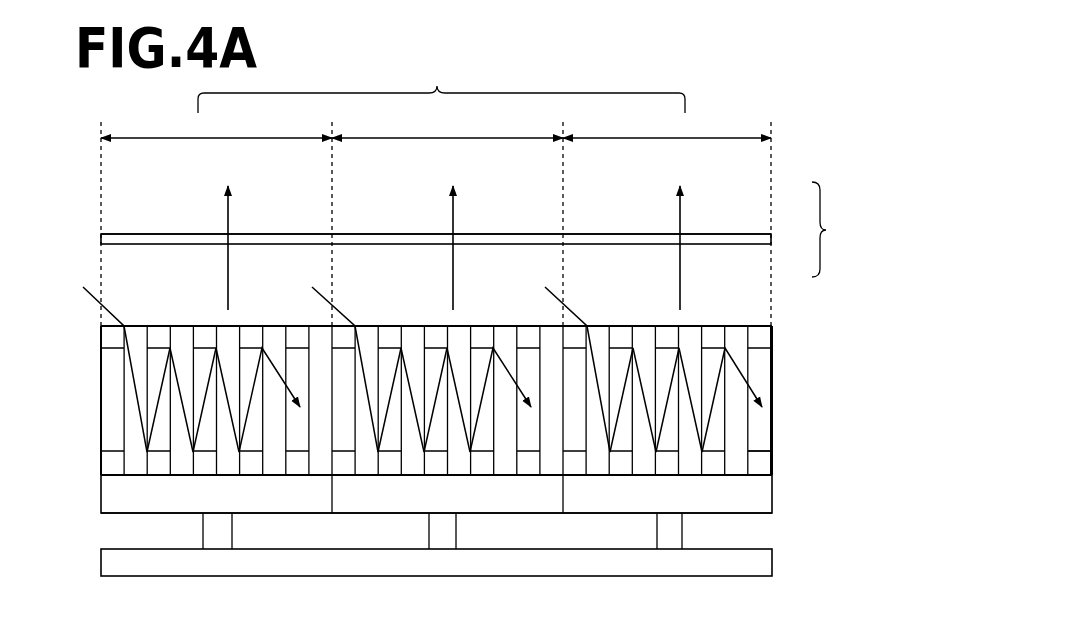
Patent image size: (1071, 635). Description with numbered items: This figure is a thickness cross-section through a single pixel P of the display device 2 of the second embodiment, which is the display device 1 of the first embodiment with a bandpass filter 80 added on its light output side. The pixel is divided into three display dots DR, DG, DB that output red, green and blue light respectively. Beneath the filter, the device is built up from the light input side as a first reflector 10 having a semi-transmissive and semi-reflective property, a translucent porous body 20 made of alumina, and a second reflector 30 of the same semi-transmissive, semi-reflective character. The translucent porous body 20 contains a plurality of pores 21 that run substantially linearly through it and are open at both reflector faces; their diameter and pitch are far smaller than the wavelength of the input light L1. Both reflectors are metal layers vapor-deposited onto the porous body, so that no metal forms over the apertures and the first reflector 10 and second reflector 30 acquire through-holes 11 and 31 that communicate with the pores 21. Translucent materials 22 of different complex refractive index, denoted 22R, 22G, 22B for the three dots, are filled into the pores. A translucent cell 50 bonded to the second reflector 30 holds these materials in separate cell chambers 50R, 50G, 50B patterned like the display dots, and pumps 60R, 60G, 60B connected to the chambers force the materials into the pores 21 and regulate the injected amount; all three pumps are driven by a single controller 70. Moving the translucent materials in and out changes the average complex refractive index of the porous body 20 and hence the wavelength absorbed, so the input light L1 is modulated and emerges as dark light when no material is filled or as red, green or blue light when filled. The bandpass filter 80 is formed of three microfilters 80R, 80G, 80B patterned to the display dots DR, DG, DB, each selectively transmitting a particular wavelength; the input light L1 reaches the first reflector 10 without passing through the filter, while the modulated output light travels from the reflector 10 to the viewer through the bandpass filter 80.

The display device 1 is at (778, 305).
The display device 2 is at (826, 229).
The first reflector 10 is at (763, 333).
The through-holes 11 is at (725, 323).
The translucent porous body 20 is at (763, 432).
The pores 21 is at (745, 443).
The translucent materials 22 is at (407, 389).
The translucent material 22R is at (183, 342).
The translucent material 22G is at (412, 343).
The translucent material 22B is at (643, 343).
The second reflector 30 is at (763, 462).
The through-holes 31 is at (726, 460).
The translucent cell 50 is at (123, 493).
The cell chamber 50R is at (265, 513).
The cell chamber 50G is at (507, 513).
The cell chamber 50B is at (737, 513).
The pump 60R is at (215, 535).
The pump 60G is at (442, 533).
The pump 60B is at (670, 532).
The controller 70 is at (745, 560).
The bandpass filter 80 is at (774, 233).
The microfilter 80R is at (282, 240).
The microfilter 80G is at (512, 240).
The microfilter 80B is at (723, 240).
The input light L1 is at (413, 358).
The display dot DR is at (216, 126).
The display dot DG is at (447, 126).
The display dot DB is at (667, 126).
The pixel pitch P is at (441, 89).